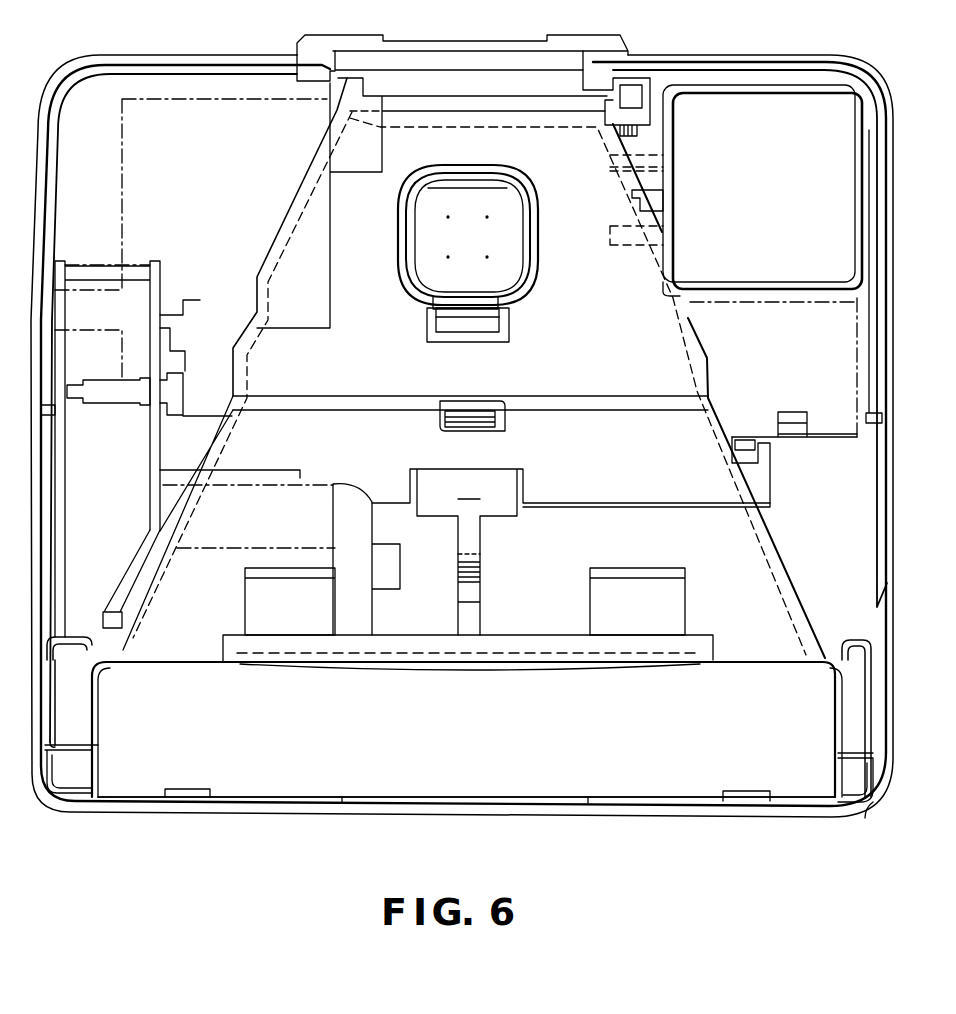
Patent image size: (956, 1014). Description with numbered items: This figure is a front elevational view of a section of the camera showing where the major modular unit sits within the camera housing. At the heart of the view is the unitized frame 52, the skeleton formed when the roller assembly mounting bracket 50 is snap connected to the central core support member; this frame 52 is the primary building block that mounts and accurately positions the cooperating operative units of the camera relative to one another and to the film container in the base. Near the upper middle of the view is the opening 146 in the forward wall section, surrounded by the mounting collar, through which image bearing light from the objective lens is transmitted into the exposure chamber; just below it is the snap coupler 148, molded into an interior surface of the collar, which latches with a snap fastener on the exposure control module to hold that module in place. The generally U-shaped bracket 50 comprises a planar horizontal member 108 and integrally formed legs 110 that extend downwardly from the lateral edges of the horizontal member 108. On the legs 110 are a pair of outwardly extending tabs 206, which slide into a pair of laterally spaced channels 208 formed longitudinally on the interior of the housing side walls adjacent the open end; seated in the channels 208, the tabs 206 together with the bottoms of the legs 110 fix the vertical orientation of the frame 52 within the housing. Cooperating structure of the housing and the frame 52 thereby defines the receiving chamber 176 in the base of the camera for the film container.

The roller assembly mounting bracket 50 is at (828, 658).
The frame 52 is at (276, 237).
The horizontal member 108 is at (437, 670).
The legs 110 is at (100, 697).
The opening 146 is at (463, 214).
The snap coupler 148 is at (467, 325).
The receiving chamber 176 is at (279, 777).
The tabs 206 is at (78, 750).
The channels 208 is at (52, 744).